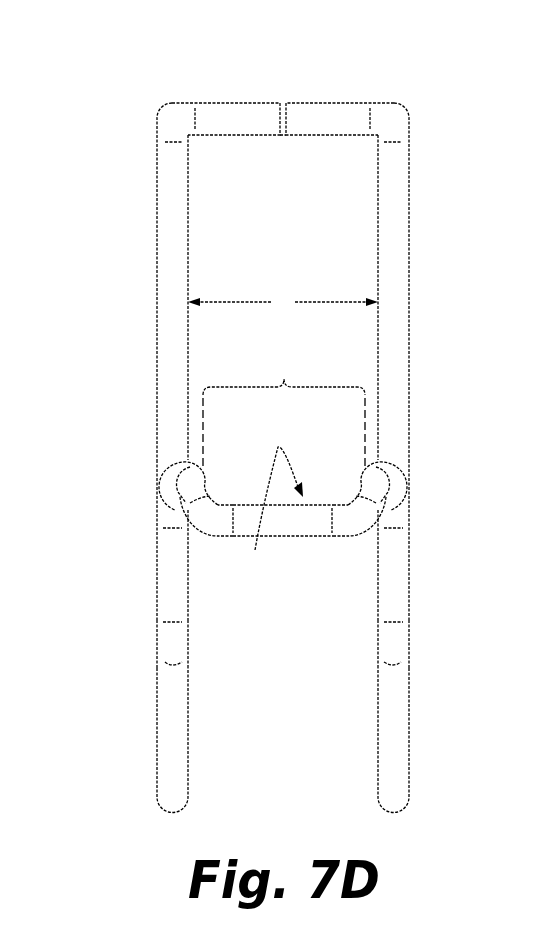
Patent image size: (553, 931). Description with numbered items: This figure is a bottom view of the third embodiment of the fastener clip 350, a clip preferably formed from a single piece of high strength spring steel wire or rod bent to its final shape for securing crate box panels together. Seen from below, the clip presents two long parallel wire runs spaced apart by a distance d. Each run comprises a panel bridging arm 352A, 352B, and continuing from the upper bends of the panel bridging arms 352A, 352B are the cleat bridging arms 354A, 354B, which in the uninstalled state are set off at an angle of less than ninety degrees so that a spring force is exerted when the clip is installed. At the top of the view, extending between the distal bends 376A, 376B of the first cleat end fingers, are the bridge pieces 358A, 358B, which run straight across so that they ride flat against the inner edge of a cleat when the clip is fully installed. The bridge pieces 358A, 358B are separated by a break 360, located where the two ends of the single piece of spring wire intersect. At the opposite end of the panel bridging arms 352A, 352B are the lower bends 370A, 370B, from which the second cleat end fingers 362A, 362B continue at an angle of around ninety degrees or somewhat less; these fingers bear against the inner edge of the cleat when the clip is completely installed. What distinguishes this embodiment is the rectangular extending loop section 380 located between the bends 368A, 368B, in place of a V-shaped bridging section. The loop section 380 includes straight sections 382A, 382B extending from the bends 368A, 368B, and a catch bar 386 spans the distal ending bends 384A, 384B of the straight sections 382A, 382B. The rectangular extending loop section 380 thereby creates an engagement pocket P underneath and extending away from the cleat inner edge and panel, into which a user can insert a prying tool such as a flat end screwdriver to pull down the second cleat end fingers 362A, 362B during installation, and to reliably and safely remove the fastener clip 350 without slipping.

The fastener clip 350 is at (460, 323).
The panel bridging arm 352A is at (394, 745).
The panel bridging arm 352B is at (172, 745).
The cleat bridging arm 354A is at (391, 230).
The cleat bridging arm 354B is at (175, 230).
The bridge piece 358A is at (332, 118).
The bridge piece 358B is at (235, 118).
The break 360 is at (284, 137).
The second cleat end finger 362A is at (394, 578).
The second cleat end finger 362B is at (172, 578).
The bend 368A is at (391, 508).
The bend 368B is at (175, 508).
The lower bend 370A is at (394, 646).
The lower bend 370B is at (172, 646).
The distal bend 376A is at (394, 113).
The distal bend 376B is at (172, 113).
The rectangular extending loop section 380 is at (283, 494).
The straight section 382A is at (371, 487).
The straight section 382B is at (195, 487).
The distal ending bend 384A is at (350, 522).
The distal ending bend 384B is at (217, 522).
The catch bar 386 is at (293, 522).